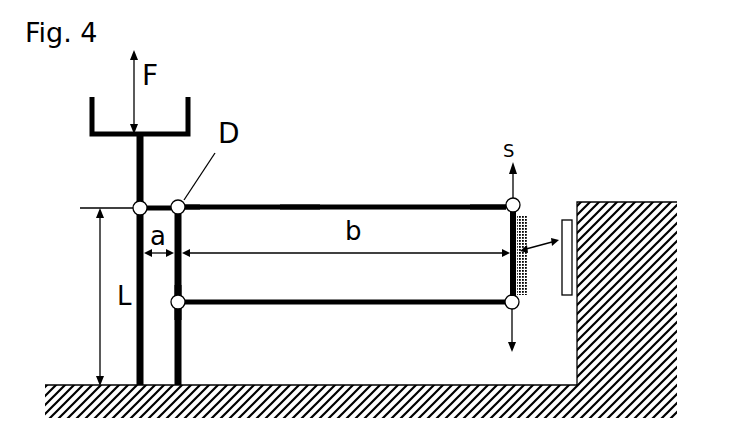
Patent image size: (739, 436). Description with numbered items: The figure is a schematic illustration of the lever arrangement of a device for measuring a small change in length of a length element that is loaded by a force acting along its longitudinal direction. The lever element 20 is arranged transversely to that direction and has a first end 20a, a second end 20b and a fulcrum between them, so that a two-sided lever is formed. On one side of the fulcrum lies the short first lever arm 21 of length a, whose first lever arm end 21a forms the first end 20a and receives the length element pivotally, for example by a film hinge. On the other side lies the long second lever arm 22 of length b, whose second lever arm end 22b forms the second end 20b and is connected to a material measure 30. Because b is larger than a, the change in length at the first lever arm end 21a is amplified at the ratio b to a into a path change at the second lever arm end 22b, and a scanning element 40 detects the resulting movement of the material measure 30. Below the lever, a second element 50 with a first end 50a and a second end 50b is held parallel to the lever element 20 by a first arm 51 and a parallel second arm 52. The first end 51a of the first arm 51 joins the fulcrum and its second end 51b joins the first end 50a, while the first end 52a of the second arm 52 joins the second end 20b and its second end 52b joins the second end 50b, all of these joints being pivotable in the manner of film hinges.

The lever element 20 is at (333, 205).
The first end of the lever element 20a is at (133, 204).
The second end of the lever element 20b is at (517, 199).
The first lever arm 21 is at (160, 203).
The first lever arm end 21a is at (125, 202).
The second lever arm 22 is at (298, 205).
The second lever arm end 22b is at (492, 200).
The material measure 30 is at (525, 283).
The scanning element 40 is at (520, 255).
The second element 50 is at (392, 304).
The first end of the second element 50a is at (186, 306).
The second end of the second element 50b is at (505, 306).
The first arm 51 is at (182, 255).
The first end of the first arm 51a is at (190, 203).
The second end of the first arm 51b is at (176, 296).
The second arm 52 is at (527, 245).
The first end of the second arm 52a is at (521, 200).
The second end of the second arm 52b is at (516, 309).